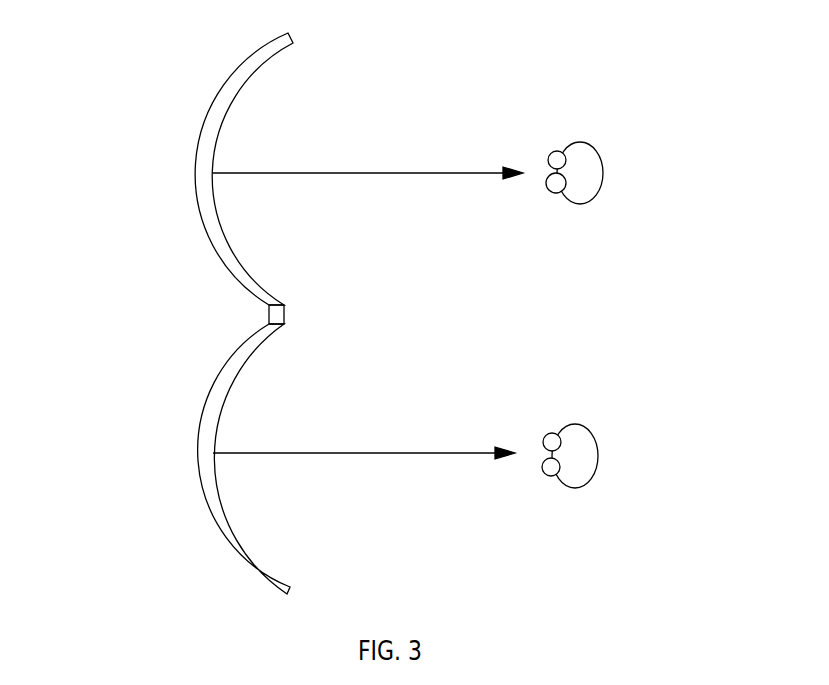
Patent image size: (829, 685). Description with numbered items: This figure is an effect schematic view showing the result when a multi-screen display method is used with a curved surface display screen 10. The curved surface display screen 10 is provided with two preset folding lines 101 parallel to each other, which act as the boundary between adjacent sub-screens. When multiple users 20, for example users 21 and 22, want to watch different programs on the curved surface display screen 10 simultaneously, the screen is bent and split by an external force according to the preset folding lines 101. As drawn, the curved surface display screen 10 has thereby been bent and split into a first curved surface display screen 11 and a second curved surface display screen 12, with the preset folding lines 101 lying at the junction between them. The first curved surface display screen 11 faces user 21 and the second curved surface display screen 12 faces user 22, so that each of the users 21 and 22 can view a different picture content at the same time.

The curved surface display screen 10 is at (103, 63).
The first curved surface display screen 11 is at (210, 110).
The second curved surface display screen 12 is at (204, 412).
The preset folding lines 101 is at (285, 303).
The users 20 is at (663, 306).
The user 21 is at (592, 203).
The user 22 is at (578, 485).